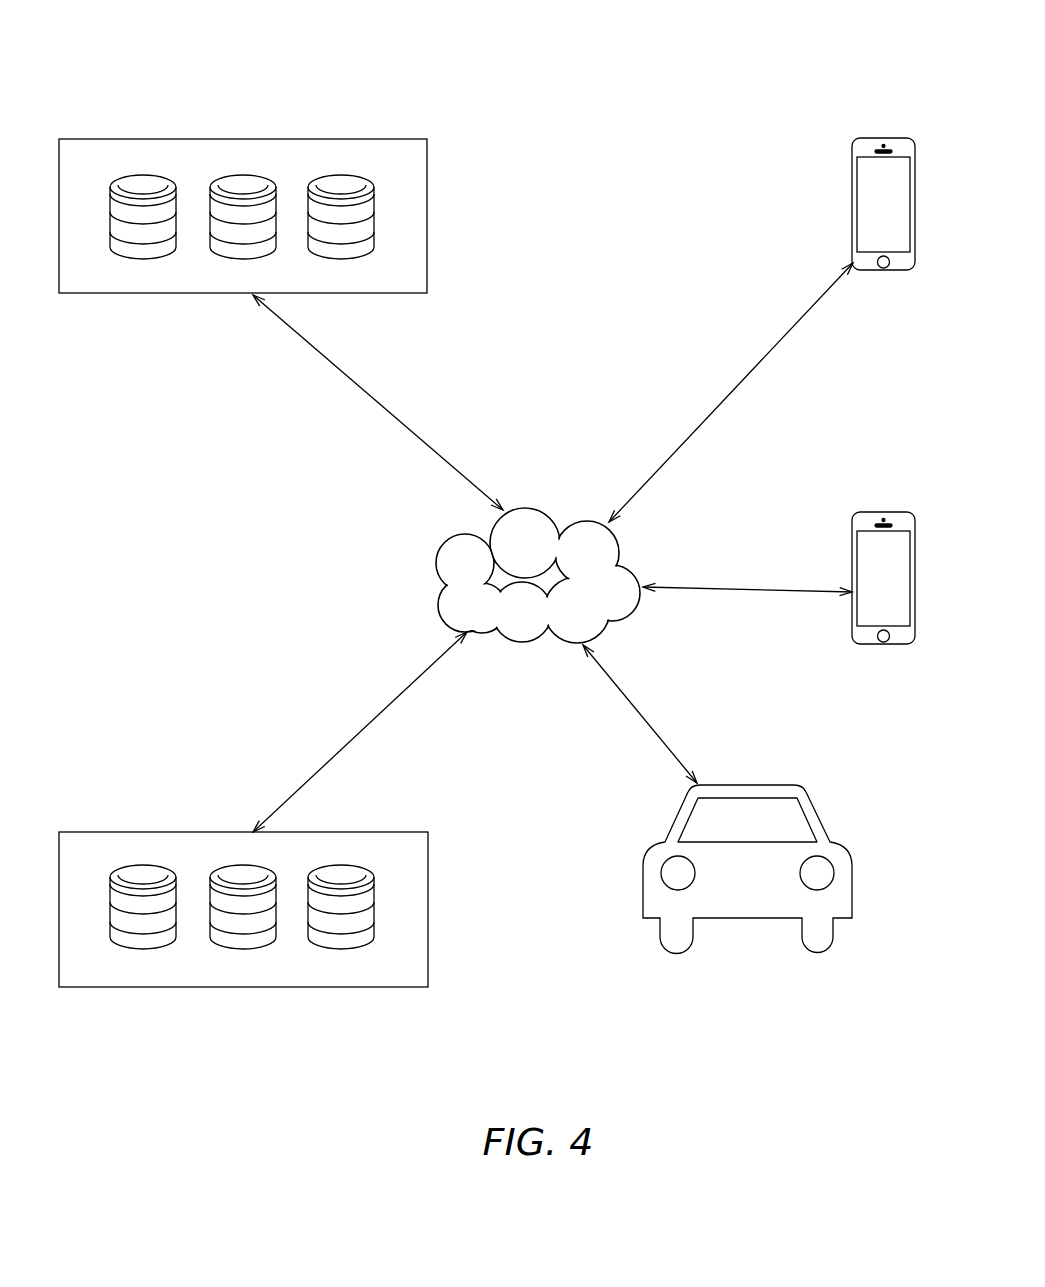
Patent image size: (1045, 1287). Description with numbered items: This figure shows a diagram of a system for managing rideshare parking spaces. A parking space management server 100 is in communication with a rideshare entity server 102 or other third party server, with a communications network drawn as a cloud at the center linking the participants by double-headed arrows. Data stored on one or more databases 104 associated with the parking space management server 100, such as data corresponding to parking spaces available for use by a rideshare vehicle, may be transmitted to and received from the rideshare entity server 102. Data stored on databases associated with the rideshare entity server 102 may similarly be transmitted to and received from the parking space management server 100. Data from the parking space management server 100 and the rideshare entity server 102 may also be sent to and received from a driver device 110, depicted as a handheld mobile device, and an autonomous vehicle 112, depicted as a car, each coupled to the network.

The parking space management server 100 is at (243, 937).
The rideshare entity server 102 is at (243, 152).
The databases 104 is at (145, 865).
The driver device 110 is at (880, 512).
The autonomous vehicle 112 is at (768, 785).